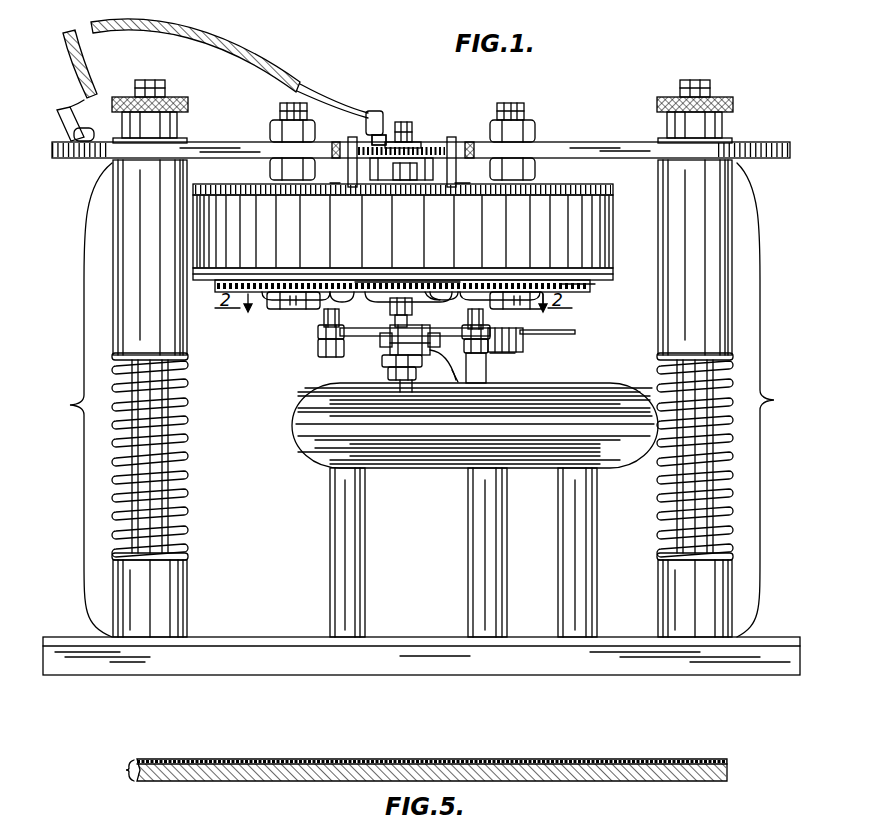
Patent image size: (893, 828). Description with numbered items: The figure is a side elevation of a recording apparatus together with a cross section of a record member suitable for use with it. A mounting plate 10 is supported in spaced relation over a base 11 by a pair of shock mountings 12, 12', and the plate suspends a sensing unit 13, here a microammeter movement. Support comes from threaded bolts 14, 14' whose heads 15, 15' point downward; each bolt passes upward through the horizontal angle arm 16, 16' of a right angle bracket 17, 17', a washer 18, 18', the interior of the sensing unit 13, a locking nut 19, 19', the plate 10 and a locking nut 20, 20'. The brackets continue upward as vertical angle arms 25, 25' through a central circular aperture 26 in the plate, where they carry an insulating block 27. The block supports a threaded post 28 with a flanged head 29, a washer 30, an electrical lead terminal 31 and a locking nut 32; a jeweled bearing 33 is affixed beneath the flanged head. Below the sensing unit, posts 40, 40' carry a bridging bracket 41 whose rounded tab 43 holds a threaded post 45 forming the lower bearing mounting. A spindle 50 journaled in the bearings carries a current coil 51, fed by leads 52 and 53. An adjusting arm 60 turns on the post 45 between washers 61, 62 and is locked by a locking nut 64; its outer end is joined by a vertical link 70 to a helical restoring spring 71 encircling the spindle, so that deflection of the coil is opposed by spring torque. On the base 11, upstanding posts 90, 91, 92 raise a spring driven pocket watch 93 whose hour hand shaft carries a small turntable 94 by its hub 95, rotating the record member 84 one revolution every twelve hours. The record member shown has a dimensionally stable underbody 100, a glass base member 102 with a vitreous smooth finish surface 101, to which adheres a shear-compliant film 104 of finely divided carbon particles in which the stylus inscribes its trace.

In FIG. 1, the mounting plate 10 is at (193, 141).
In FIG. 1, the base 11 is at (240, 660).
In FIG. 1, the shock mounting 12 is at (144, 358).
In FIG. 1, the shock mounting 12' is at (731, 358).
In FIG. 1, the sensing unit 13 is at (418, 262).
In FIG. 1, the threaded bolt 14 is at (276, 104).
In FIG. 1, the threaded bolt 14' is at (533, 105).
In FIG. 1, the bolt head 15 is at (293, 313).
In FIG. 1, the bolt head 15' is at (548, 311).
In FIG. 1, the horizontal angle arm 16 is at (403, 270).
In FIG. 1, the horizontal angle arm 16' is at (584, 295).
In FIG. 1, the right angle bracket 17 is at (402, 271).
In FIG. 1, the right angle bracket 17' is at (454, 304).
In FIG. 1, the washer 18 is at (296, 270).
In FIG. 1, the washer 18' is at (500, 270).
In FIG. 1, the locking nut 19 is at (271, 170).
In FIG. 1, the locking nut 19' is at (534, 169).
In FIG. 1, the locking nut 20 is at (276, 130).
In FIG. 1, the locking nut 20' is at (534, 130).
In FIG. 1, the vertical angle arm 25 is at (336, 201).
In FIG. 1, the vertical angle arm 25' is at (461, 200).
In FIG. 1, the central circular aperture 26 is at (468, 141).
In FIG. 1, the insulating block 27 is at (455, 136).
In FIG. 1, the threaded post 28 is at (411, 125).
In FIG. 1, the flanged head 29 is at (386, 190).
In FIG. 1, the washer 30 is at (375, 141).
In FIG. 1, the electrical lead terminal 31 is at (421, 147).
In FIG. 1, the locking nut 32 is at (381, 120).
In FIG. 1, the jeweled bearing 33 is at (400, 190).
In FIG. 1, the post 40 is at (308, 351).
In FIG. 1, the post 40' is at (499, 340).
In FIG. 1, the bridging bracket 41 is at (337, 358).
In FIG. 1, the rounded tab 43 is at (474, 380).
In FIG. 1, the threaded post 45 is at (404, 381).
In FIG. 1, the spindle 50 is at (416, 290).
In FIG. 1, the current coil 51 is at (382, 290).
In FIG. 1, the lead 52 is at (238, 44).
In FIG. 1, the lead 53 is at (93, 72).
In FIG. 1, the adjusting arm 60 is at (385, 362).
In FIG. 1, the washer 61 is at (452, 374).
In FIG. 1, the washer 62 is at (432, 358).
In FIG. 1, the locking nut 64 is at (416, 381).
In FIG. 1, the vertical link 70 is at (388, 337).
In FIG. 1, the helical restoring spring 71 is at (392, 313).
In FIG. 1, the record member 84 is at (575, 334).
In FIG. 1, the upstanding post 90 is at (367, 540).
In FIG. 1, the upstanding post 91 is at (508, 540).
In FIG. 1, the upstanding post 92 is at (598, 540).
In FIG. 1, the pocket watch 93 is at (297, 452).
In FIG. 1, the turntable 94 is at (524, 338).
In FIG. 1, the hub 95 is at (515, 355).
In FIG. 5, the underbody 100 is at (408, 770).
In FIG. 5, the smooth finish surface 101 is at (304, 758).
In FIG. 5, the glass base member 102 is at (318, 782).
In FIG. 5, the film 104 is at (357, 758).